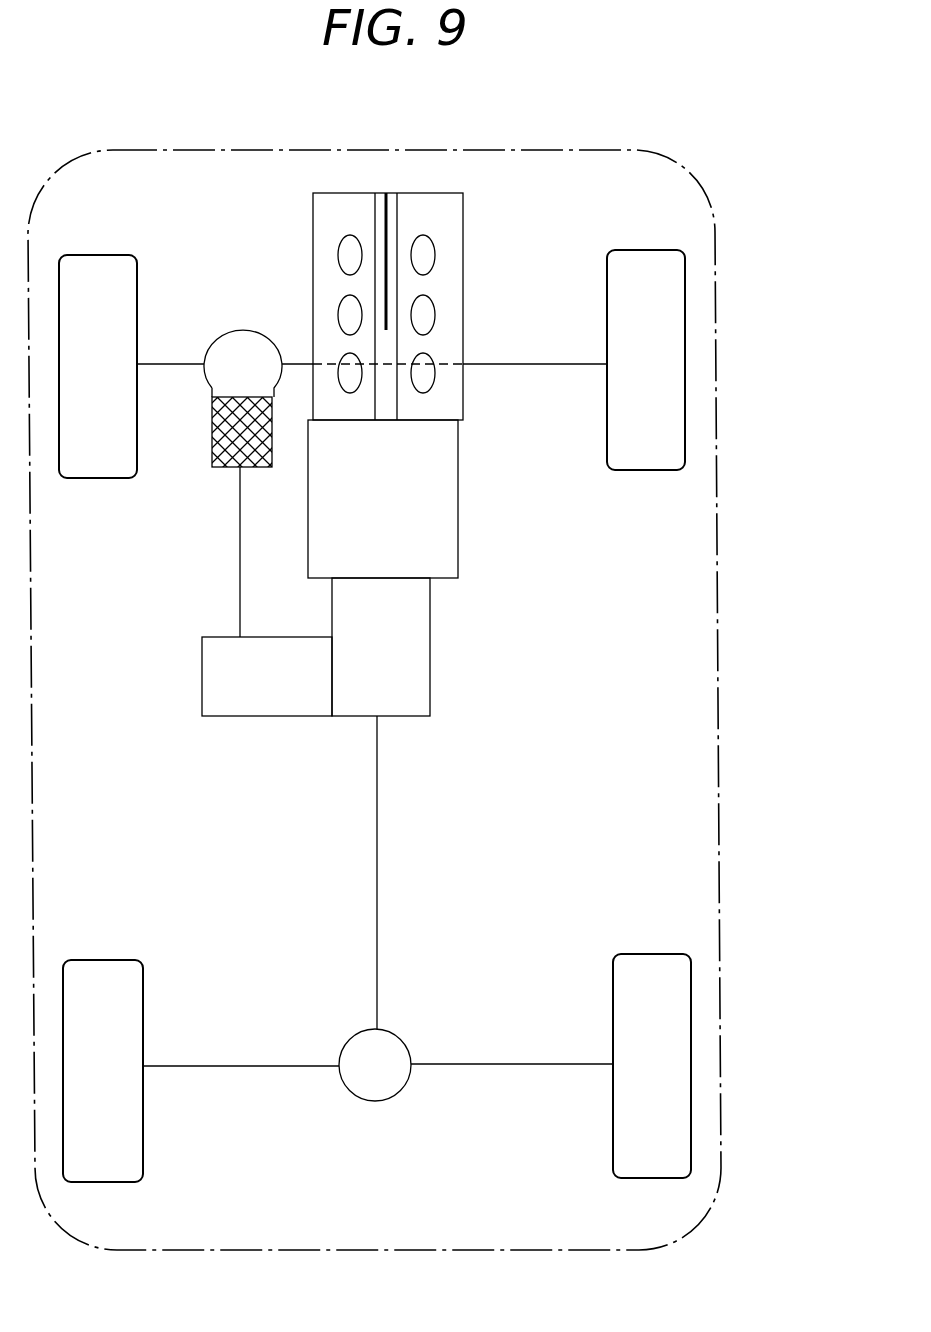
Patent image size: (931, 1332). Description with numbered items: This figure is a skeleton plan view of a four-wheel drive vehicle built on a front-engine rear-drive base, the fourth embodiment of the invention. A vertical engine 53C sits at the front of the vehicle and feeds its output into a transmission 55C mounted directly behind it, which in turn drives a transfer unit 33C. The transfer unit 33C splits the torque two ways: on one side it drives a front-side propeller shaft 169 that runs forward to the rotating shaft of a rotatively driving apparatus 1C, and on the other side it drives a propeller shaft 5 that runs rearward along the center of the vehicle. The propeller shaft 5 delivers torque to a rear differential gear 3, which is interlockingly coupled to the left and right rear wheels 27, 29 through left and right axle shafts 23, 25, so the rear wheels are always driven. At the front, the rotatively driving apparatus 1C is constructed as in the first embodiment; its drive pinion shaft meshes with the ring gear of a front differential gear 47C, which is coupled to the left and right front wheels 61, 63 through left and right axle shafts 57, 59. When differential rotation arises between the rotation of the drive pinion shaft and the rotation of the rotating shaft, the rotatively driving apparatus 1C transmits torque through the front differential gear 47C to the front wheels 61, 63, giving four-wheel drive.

The left front wheel 61 is at (86, 256).
The right front wheel 63 is at (670, 250).
The left rear wheel 27 is at (82, 960).
The right rear wheel 29 is at (658, 954).
The left axle shaft 57 is at (160, 366).
The right axle shaft 59 is at (523, 364).
The front differential gear 47C is at (243, 329).
The rotatively driving apparatus 1C is at (212, 460).
The front-side propeller shaft 169 is at (240, 570).
The vertical engine 53C is at (463, 228).
The transmission 55C is at (446, 528).
The transfer unit 33C is at (431, 679).
The propeller shaft 5 is at (379, 840).
The rear differential gear 3 is at (382, 1104).
The left axle shaft 23 is at (226, 1067).
The right axle shaft 25 is at (494, 1064).